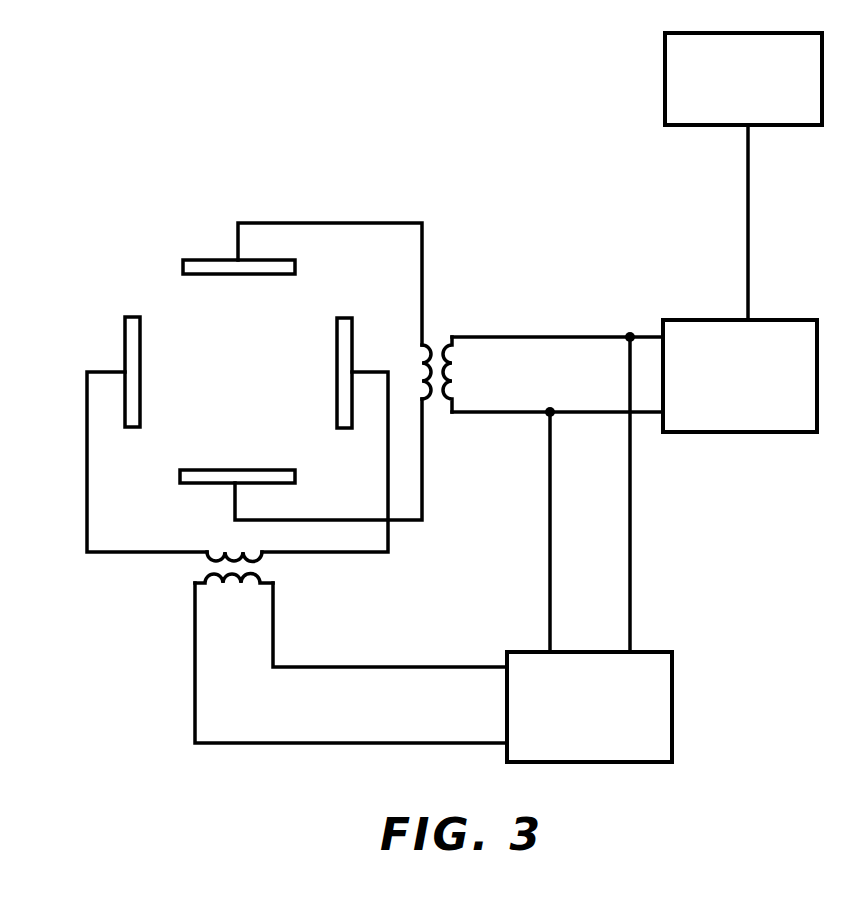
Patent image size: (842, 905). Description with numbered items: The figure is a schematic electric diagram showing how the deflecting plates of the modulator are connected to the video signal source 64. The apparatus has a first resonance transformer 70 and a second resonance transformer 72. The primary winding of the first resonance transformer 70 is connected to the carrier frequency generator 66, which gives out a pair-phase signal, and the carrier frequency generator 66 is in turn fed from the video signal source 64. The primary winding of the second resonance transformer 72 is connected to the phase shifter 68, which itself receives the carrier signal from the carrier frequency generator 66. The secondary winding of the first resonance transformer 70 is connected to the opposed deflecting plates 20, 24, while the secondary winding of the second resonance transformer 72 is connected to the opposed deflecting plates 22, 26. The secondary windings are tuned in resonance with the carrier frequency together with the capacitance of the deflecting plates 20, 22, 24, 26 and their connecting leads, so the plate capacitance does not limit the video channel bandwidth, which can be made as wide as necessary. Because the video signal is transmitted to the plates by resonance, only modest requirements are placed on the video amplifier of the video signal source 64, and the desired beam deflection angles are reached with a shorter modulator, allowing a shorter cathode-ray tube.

The deflecting plate 20 is at (191, 260).
The deflecting plate 22 is at (353, 330).
The deflecting plate 24 is at (186, 483).
The deflecting plate 26 is at (125, 341).
The video signal source 64 is at (665, 58).
The carrier frequency generator 66 is at (804, 320).
The phase shifter 68 is at (673, 682).
The first resonance transformer 70 is at (437, 352).
The second resonance transformer 72 is at (206, 575).